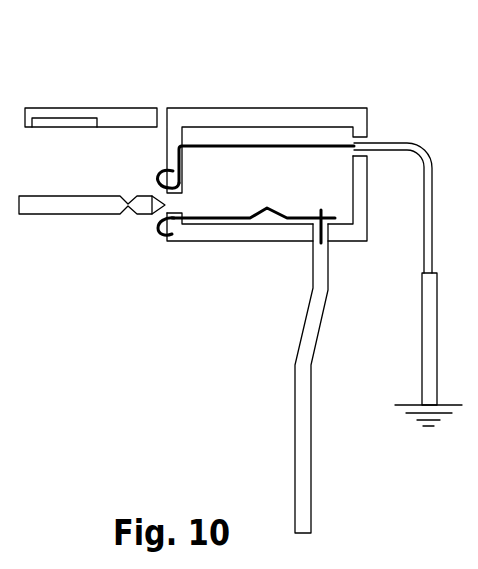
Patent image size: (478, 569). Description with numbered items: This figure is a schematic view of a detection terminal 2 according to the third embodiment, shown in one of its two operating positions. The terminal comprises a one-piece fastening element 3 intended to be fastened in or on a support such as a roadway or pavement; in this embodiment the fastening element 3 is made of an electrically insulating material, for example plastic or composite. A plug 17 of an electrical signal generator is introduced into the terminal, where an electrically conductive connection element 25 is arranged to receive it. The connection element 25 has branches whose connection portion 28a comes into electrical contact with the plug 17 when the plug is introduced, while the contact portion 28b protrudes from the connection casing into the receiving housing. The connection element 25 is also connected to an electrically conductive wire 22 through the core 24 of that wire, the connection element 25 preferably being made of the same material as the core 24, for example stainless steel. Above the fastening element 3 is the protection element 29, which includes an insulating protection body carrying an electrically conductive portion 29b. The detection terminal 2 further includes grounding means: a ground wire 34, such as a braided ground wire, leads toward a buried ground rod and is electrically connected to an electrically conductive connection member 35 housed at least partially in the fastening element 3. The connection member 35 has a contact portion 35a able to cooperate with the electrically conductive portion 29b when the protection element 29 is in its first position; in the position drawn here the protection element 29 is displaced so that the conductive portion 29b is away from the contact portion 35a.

The detection terminal 2 is at (287, 126).
The fastening element 3 is at (249, 108).
The plug 17 is at (66, 206).
The electrically conductive wire 22 is at (302, 432).
The core 24 is at (330, 227).
The connection element 25 is at (237, 269).
The connection portion 28a is at (267, 212).
The contact portion 28b is at (158, 227).
The protection element 29 is at (91, 83).
The electrically conductive portion 29b is at (63, 121).
The ground wire 34 is at (430, 182).
The connection member 35 is at (206, 124).
The contact portion 35a is at (160, 178).